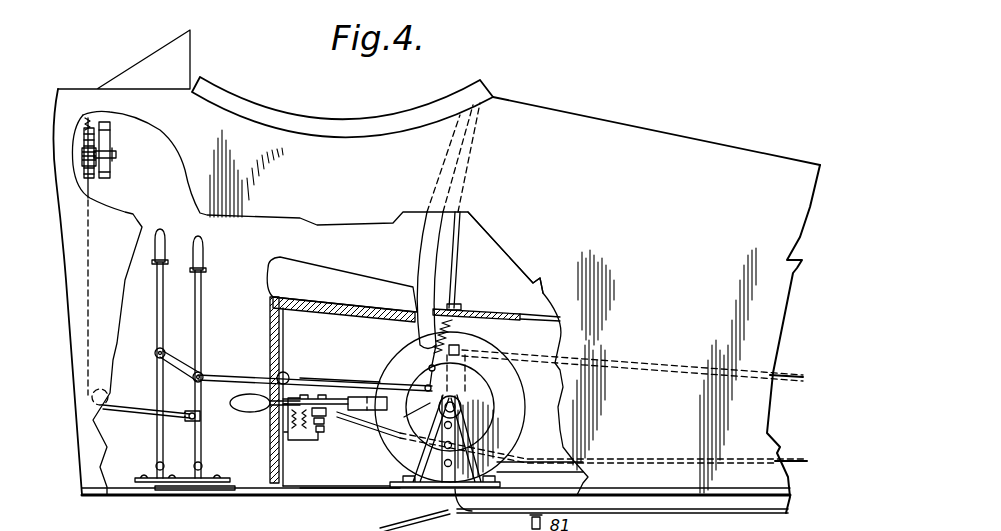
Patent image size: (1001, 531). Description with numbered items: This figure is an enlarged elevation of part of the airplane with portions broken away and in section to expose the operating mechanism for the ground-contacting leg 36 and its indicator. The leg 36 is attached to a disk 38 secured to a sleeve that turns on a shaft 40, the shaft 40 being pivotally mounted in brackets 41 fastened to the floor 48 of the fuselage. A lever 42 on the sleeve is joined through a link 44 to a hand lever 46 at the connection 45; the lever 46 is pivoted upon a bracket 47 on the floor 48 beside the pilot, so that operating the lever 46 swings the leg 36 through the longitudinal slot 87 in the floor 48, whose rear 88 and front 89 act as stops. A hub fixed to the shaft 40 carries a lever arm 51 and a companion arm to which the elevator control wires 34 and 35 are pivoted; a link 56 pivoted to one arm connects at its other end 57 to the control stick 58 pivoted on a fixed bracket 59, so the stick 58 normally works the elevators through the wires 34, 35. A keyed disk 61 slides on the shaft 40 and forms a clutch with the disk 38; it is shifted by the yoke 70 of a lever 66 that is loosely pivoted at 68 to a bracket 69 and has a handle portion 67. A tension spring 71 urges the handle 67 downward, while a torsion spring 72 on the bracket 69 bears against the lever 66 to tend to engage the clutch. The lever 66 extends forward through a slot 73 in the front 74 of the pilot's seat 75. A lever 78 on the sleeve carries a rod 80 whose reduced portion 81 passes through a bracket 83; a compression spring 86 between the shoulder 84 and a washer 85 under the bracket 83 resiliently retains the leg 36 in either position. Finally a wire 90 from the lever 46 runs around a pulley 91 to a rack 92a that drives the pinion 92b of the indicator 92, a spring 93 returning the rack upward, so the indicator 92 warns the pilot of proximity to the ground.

The control wire 34 is at (548, 343).
The control wire 35 is at (565, 468).
The depending leg 36 is at (603, 513).
The disk 38 is at (490, 409).
The shaft 40 is at (463, 409).
The bracket 41 is at (405, 462).
The lever 42 is at (455, 395).
The link 44 is at (323, 377).
The connection point 45 is at (195, 382).
The lever 46 is at (201, 320).
The bracket 47 is at (196, 484).
The floor 48 is at (243, 496).
The lever arm 51 is at (477, 366).
The link 56 is at (333, 428).
The pivot connection 57 is at (156, 359).
The control lever 58 is at (155, 333).
The fixed bracket 59 is at (137, 474).
The disk 61 is at (373, 368).
The lever 66 is at (298, 397).
The handle portion 67 is at (251, 408).
The pivot 68 is at (341, 398).
The bracket 69 is at (300, 434).
The yoke 70 is at (368, 424).
The tension spring 71 is at (284, 424).
The torsion spring 72 is at (330, 488).
The slot 73 is at (277, 373).
The front of pilot's seat 74 is at (270, 345).
The pilot's seat 75 is at (352, 267).
The lever 78 is at (412, 413).
The rod 80 is at (431, 365).
The reduced portion 81 is at (457, 298).
The bracket 83 is at (533, 280).
The shoulder 84 is at (452, 306).
The washer 85 is at (479, 312).
The compression spring 86 is at (462, 347).
The longitudinal slot 87 is at (403, 489).
The rear of slot 88 is at (473, 512).
The front of slot 89 is at (350, 488).
The wire 90 is at (88, 245).
The pulley 91 is at (92, 396).
The indicator 92 is at (107, 135).
The rack 92a is at (92, 170).
The pinion 92b is at (98, 166).
The spring 93 is at (88, 120).